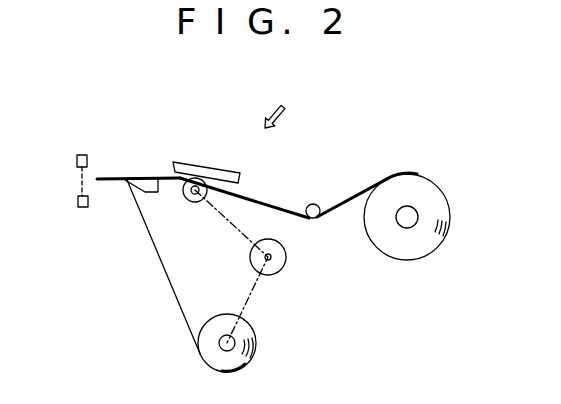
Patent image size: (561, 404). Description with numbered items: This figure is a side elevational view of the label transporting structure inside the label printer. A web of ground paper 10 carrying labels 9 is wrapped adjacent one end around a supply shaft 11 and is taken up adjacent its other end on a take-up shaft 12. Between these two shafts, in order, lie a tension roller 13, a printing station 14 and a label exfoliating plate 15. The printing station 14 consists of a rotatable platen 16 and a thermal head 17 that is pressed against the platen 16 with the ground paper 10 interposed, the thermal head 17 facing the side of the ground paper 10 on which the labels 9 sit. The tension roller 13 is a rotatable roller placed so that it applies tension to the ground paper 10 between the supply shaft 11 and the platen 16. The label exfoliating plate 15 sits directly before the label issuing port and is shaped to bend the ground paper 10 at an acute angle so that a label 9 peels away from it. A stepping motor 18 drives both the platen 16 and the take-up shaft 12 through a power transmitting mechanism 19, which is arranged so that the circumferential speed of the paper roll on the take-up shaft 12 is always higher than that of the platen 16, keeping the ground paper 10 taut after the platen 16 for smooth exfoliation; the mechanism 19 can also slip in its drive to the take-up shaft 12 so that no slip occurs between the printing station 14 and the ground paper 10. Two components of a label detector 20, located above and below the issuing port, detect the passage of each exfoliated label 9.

The label 9 is at (113, 178).
The ground paper 10 is at (157, 255).
The supply shaft 11 is at (407, 214).
The take-up shaft 12 is at (235, 343).
The tension roller 13 is at (313, 203).
The printing station 14 is at (286, 101).
The label exfoliating plate 15 is at (147, 183).
The platen 16 is at (195, 178).
The thermal head 17 is at (213, 168).
The stepping motor 18 is at (280, 246).
The power transmitting mechanism 19 is at (233, 228).
The label detector 20 is at (82, 207).